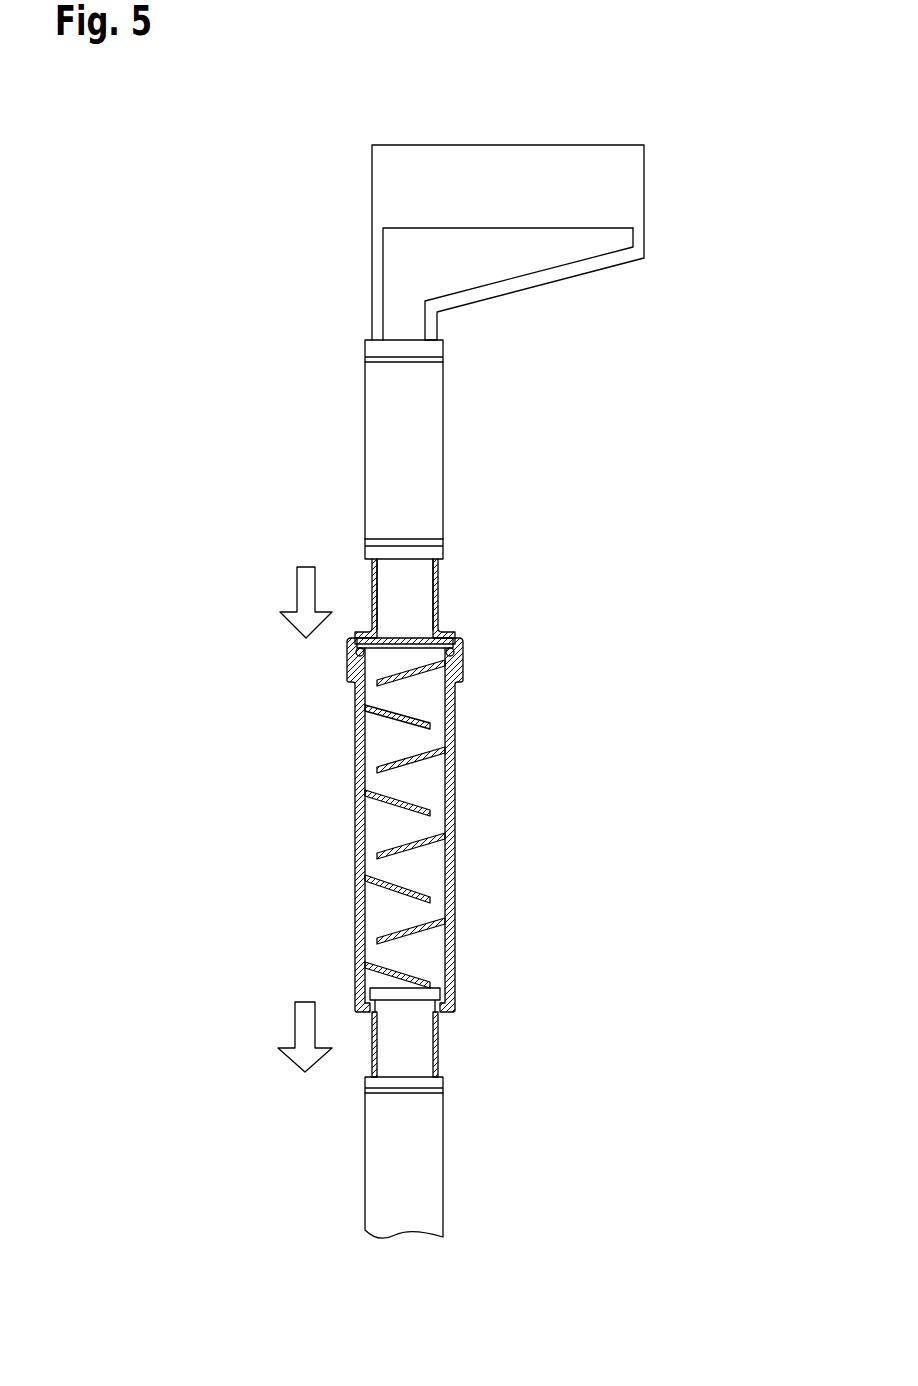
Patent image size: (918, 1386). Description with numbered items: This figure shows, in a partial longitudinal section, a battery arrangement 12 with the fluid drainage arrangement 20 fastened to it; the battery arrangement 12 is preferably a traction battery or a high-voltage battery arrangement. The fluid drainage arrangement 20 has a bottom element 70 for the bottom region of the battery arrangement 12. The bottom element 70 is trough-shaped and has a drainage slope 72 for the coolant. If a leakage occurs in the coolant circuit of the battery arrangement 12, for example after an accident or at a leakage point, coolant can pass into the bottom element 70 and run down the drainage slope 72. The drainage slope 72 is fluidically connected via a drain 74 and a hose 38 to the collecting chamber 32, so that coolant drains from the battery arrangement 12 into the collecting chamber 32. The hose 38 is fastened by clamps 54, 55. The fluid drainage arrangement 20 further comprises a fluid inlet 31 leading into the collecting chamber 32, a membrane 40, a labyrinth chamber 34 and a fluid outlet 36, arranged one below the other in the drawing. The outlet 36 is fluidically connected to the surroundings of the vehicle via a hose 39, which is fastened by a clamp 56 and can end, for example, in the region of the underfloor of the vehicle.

The fluid drainage arrangement 20 is at (244, 216).
The battery arrangement 12 is at (658, 198).
The drainage slope 72 is at (553, 267).
The bottom element 70 is at (513, 263).
The drain 74 is at (393, 305).
The clamp 54 is at (378, 359).
The hose 38 is at (380, 446).
The clamp 55 is at (378, 545).
The fluid inlet 31 is at (420, 576).
The collecting chamber 32 is at (405, 610).
The membrane 40 is at (450, 642).
The labyrinth chamber 34 is at (466, 795).
The fluid outlet 36 is at (421, 1063).
The clamp 56 is at (428, 1090).
The hose 39 is at (380, 1189).